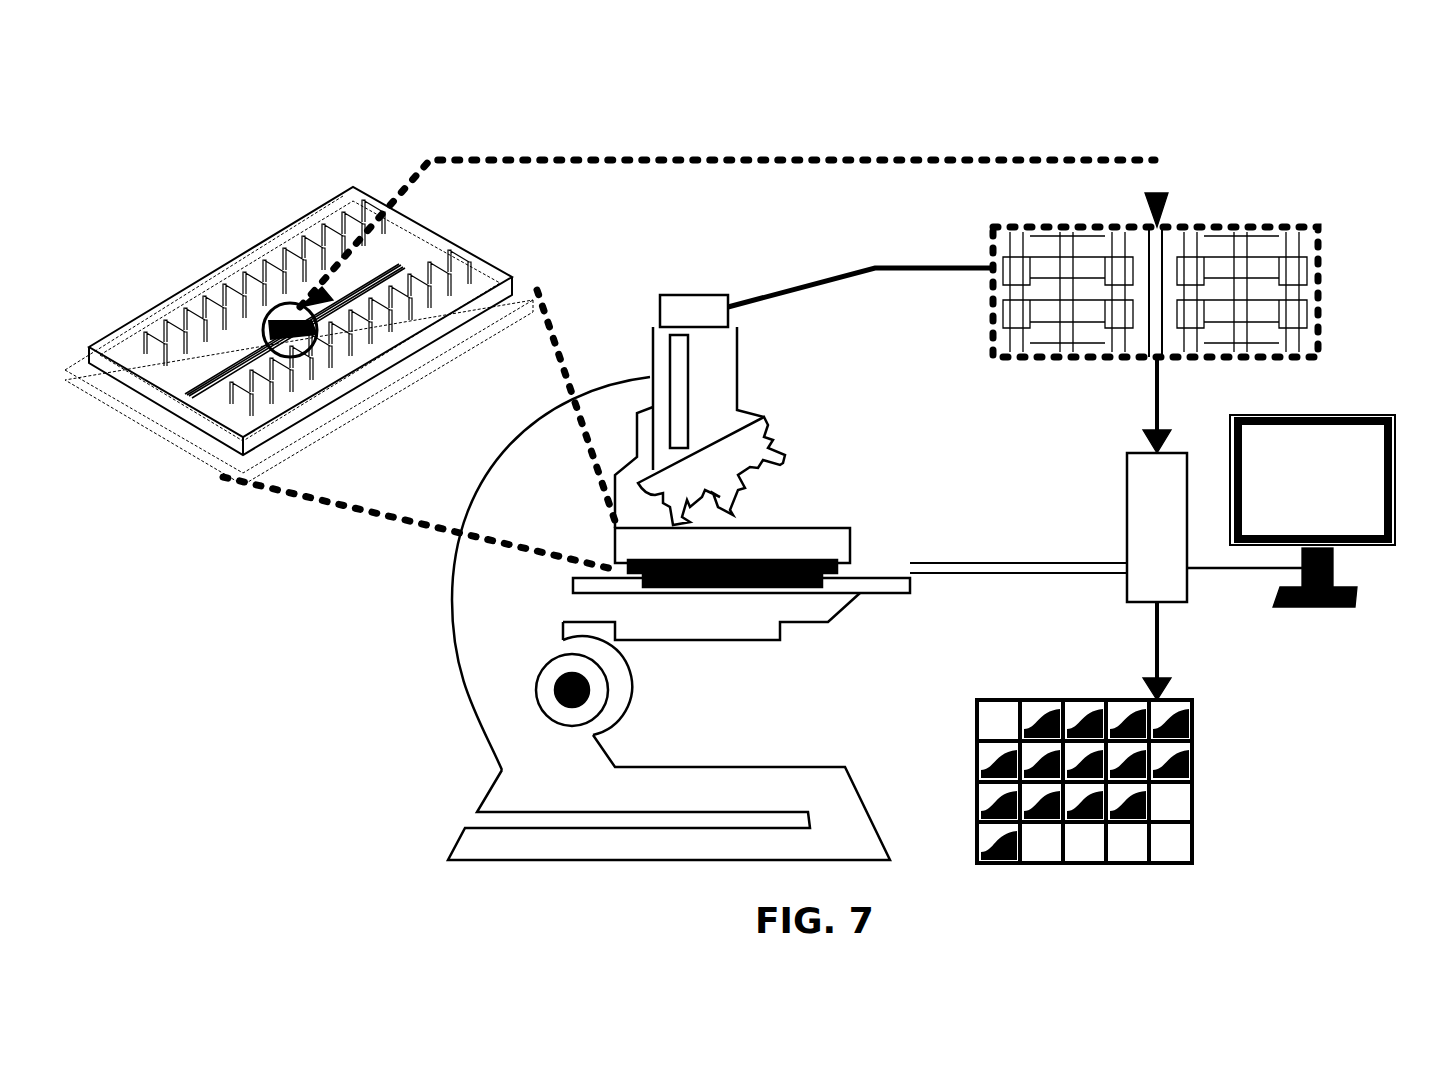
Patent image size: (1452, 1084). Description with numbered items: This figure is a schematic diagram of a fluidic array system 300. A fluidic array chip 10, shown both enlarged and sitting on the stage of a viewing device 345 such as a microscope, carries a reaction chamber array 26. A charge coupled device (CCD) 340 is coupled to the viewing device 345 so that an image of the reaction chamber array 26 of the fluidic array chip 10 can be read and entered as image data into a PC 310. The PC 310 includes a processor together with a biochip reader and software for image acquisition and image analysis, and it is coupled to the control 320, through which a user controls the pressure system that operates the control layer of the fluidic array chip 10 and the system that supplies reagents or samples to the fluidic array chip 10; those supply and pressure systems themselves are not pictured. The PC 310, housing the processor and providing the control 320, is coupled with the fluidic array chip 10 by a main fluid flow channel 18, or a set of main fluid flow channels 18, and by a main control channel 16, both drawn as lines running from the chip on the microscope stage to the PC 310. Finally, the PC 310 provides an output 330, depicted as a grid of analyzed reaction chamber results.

The fluidic array chip 10 is at (258, 238).
The reaction chamber array 26 is at (1295, 227).
The fluidic array system 300 is at (1222, 177).
The PC 310 is at (1187, 594).
The control 320 is at (1327, 415).
The output 330 is at (1192, 832).
The charge coupled device (CCD) 340 is at (728, 312).
The viewing device 345 is at (450, 628).
The main fluid flow channel 18 is at (925, 565).
The main control channel 16 is at (935, 578).